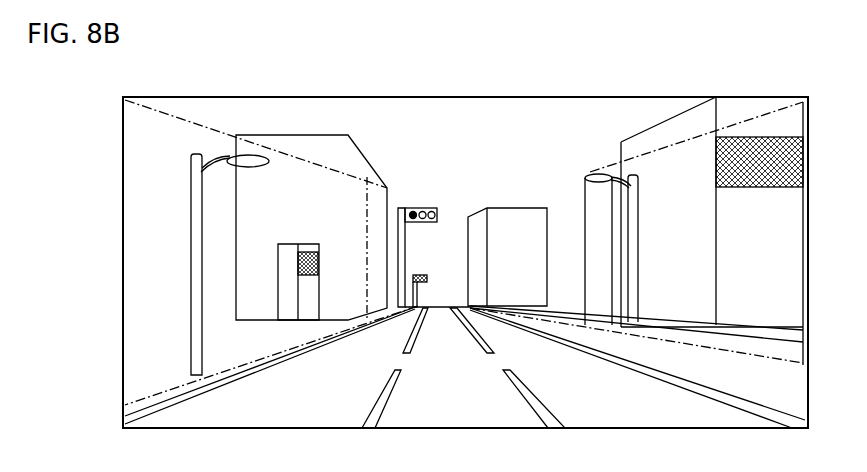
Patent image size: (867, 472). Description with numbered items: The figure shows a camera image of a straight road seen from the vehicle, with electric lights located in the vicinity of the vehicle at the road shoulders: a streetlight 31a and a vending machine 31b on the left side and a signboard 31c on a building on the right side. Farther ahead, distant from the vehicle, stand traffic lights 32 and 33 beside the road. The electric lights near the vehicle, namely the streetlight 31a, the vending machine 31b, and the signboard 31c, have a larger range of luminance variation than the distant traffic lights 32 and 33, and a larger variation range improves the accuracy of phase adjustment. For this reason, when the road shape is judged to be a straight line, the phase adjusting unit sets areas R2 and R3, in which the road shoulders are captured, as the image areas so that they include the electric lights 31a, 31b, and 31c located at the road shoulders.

The streetlight 31a is at (250, 167).
The vending machine 31b is at (293, 243).
The signboard 31c is at (757, 189).
The traffic light 32 is at (421, 206).
The traffic light 33 is at (424, 274).
The area R2 is at (762, 357).
The area R3 is at (157, 398).